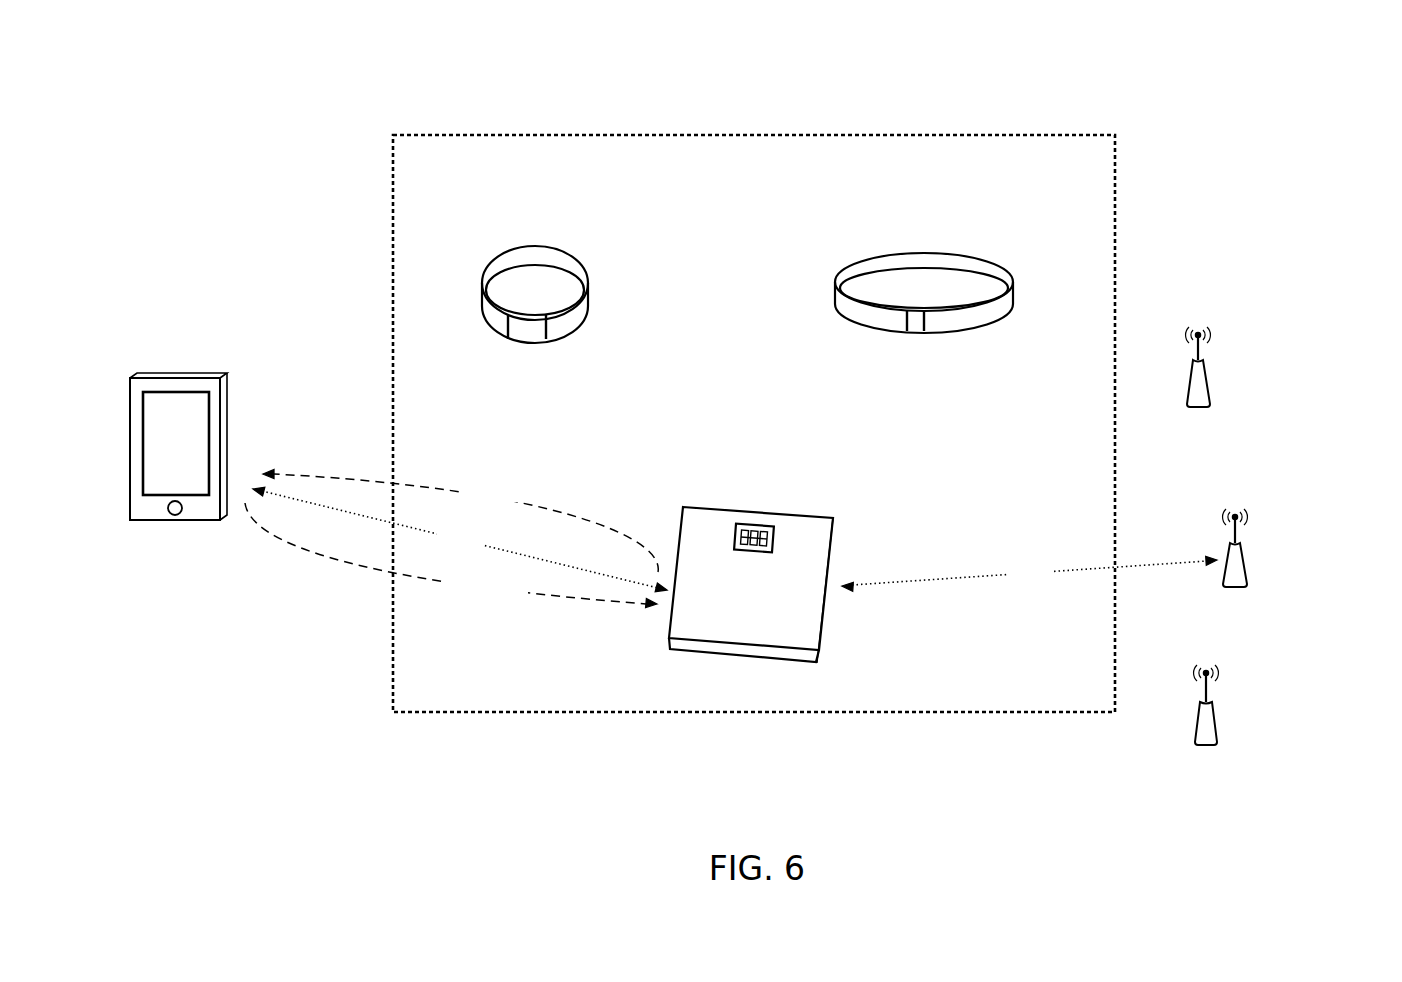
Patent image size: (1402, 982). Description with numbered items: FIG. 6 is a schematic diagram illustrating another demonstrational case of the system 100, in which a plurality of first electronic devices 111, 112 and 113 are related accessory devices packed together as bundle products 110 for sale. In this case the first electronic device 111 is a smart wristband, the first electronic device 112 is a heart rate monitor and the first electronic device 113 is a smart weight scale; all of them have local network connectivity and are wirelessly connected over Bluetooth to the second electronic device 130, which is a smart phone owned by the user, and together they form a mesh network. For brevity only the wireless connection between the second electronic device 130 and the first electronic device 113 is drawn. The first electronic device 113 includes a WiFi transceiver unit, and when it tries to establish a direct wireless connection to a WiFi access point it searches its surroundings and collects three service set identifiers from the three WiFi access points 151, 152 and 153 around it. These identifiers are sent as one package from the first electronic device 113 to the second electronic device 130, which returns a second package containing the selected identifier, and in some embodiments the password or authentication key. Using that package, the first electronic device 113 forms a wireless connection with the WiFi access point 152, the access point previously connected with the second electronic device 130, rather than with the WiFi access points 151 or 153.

The system 100 is at (1210, 64).
The bundle products 110 is at (968, 135).
The first electronic device 111 is at (556, 250).
The first electronic device 112 is at (942, 253).
The first electronic device 113 is at (757, 511).
The second electronic device 130 is at (183, 374).
The WiFi access point 151 is at (1210, 373).
The WiFi access point 152 is at (1247, 558).
The WiFi access point 153 is at (1217, 720).